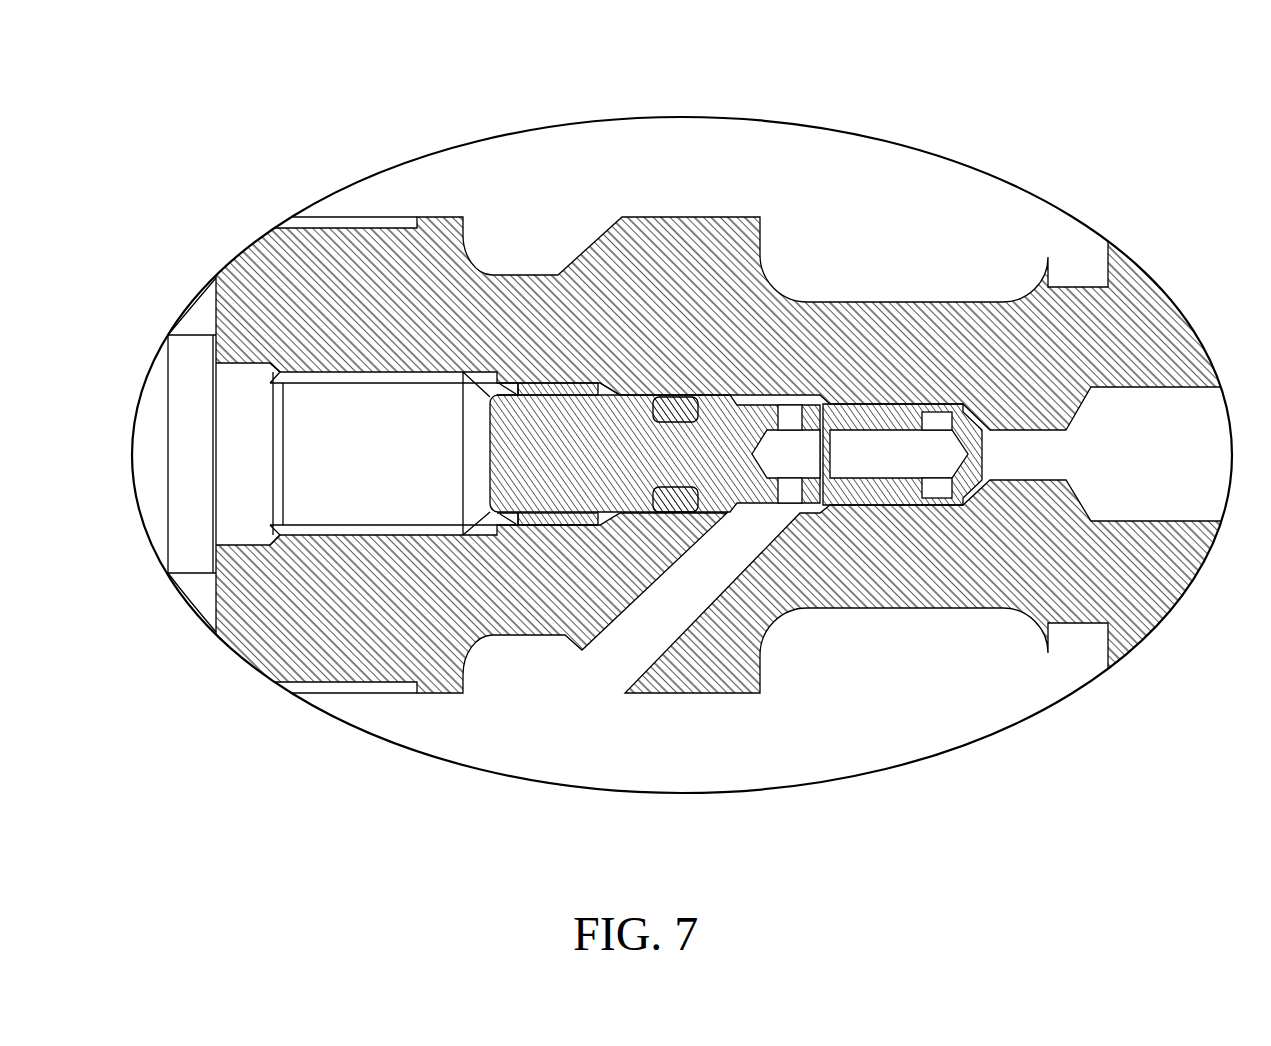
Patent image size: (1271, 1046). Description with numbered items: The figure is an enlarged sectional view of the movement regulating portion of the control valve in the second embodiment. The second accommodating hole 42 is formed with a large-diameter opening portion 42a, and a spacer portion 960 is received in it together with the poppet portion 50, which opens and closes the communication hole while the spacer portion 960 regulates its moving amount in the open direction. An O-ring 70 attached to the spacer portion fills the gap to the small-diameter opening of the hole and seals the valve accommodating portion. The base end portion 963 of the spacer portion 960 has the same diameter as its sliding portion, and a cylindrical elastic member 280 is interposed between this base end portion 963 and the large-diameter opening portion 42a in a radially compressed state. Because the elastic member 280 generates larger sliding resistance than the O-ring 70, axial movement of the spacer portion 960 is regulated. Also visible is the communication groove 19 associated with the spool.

The communication groove 19 is at (302, 688).
The second accommodating hole 42 is at (498, 497).
The large-diameter opening portion 42a is at (558, 525).
The cylindrical elastic member 280 is at (544, 383).
The base end portion 963 is at (519, 383).
The spacer portion 960 is at (630, 395).
The O-ring 70 is at (686, 400).
The poppet portion 50 is at (893, 403).